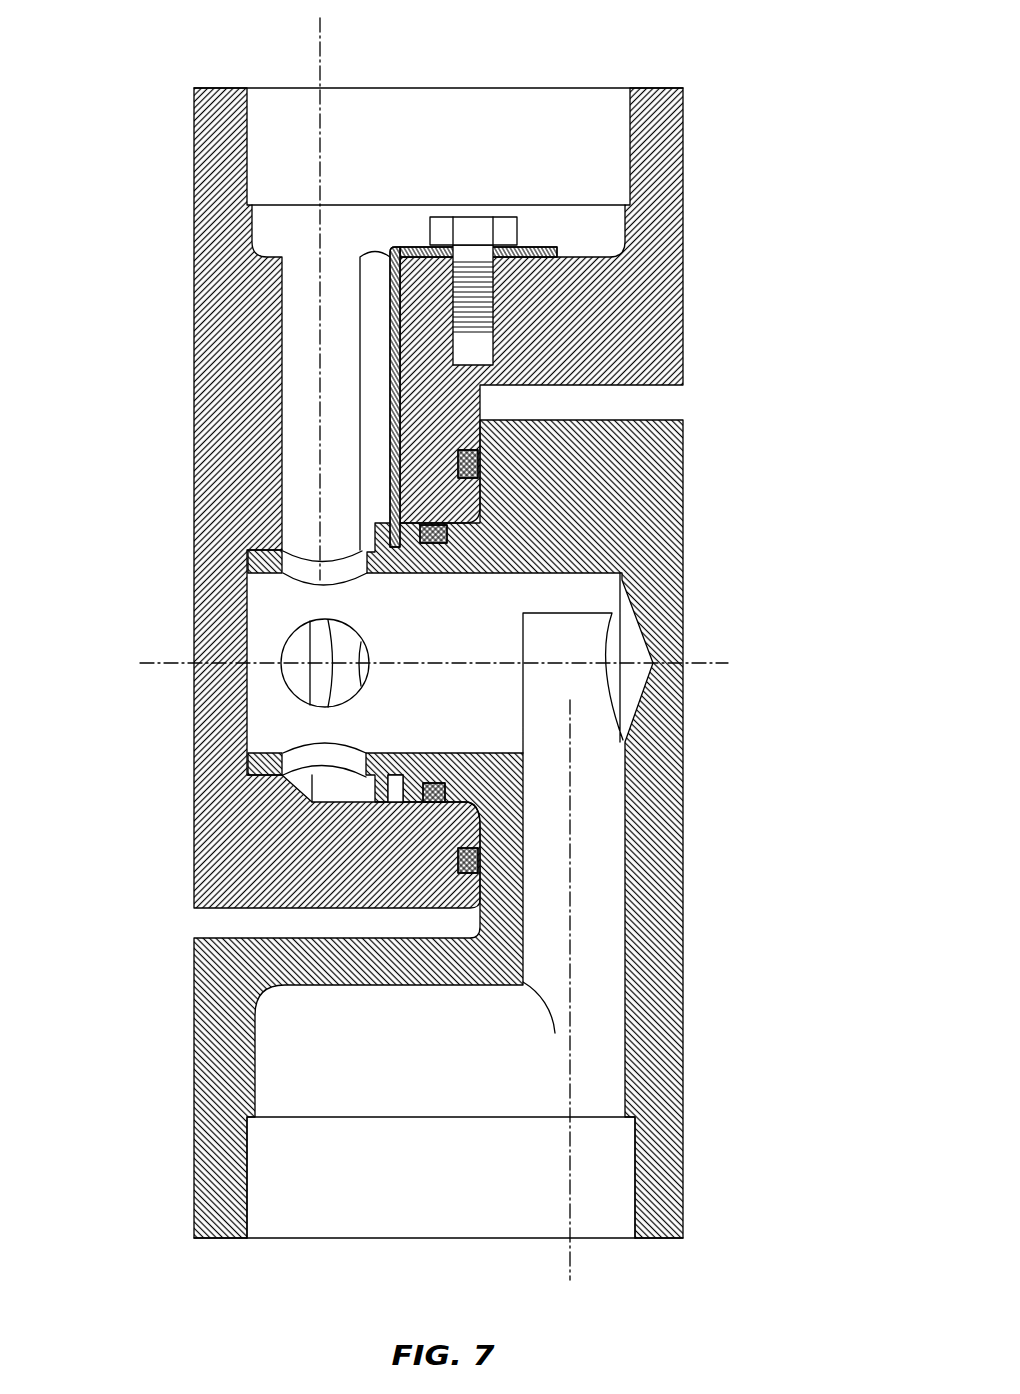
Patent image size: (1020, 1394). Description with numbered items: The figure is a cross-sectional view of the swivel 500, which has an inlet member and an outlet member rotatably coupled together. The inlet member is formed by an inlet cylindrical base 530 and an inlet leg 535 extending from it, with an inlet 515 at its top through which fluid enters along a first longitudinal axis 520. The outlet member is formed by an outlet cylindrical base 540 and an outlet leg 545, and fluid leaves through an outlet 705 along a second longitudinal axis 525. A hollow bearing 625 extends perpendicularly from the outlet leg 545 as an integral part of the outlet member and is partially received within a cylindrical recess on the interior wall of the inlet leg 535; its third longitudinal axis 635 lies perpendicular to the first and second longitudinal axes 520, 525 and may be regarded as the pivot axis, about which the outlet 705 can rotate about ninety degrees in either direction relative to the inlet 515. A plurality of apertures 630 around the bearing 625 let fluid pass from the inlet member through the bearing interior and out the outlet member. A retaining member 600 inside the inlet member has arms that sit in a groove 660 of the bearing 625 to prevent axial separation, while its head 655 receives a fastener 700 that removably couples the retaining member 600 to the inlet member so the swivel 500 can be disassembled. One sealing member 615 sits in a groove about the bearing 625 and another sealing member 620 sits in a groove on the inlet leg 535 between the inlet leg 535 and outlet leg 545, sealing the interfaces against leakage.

The swivel 500 is at (158, 236).
The inlet 515 is at (469, 118).
The first longitudinal axis 520 is at (318, 126).
The second longitudinal axis 525 is at (570, 1187).
The inlet cylindrical base 530 is at (670, 290).
The inlet leg 535 is at (245, 802).
The outlet cylindrical base 540 is at (205, 1138).
The outlet leg 545 is at (673, 842).
The retaining member 600 is at (390, 338).
The sealing member 615 is at (447, 536).
The sealing member 620 is at (470, 462).
The hollow bearing 625 is at (270, 724).
The apertures 630 is at (297, 648).
The third longitudinal axis 635 is at (703, 667).
The head 655 is at (545, 250).
The groove 660 is at (394, 792).
The fastener 700 is at (480, 222).
The outlet 705 is at (428, 1188).